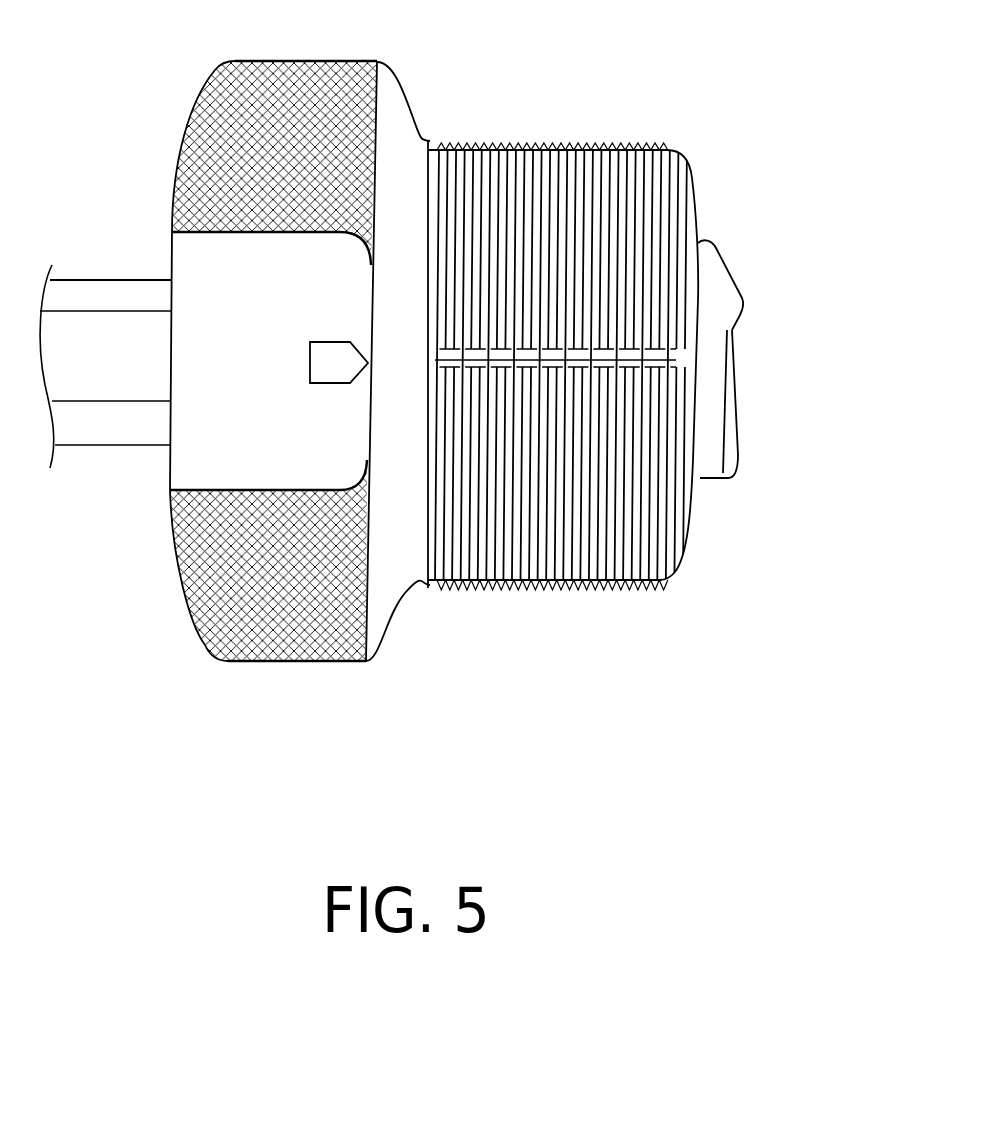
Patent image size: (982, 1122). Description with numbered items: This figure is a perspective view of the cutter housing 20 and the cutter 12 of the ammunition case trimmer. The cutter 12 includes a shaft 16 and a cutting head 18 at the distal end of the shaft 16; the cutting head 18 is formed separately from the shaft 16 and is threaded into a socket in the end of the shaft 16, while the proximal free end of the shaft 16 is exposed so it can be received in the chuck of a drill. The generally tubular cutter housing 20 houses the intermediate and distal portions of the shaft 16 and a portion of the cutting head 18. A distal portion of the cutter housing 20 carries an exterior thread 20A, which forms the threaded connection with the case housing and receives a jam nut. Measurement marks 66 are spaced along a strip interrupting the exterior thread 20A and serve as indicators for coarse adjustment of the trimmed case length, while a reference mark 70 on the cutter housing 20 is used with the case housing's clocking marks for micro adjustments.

The cutter 12 is at (752, 296).
The shaft 16 is at (113, 448).
The cutting head 18 is at (720, 262).
The cutter housing 20 is at (407, 96).
The exterior thread 20A is at (548, 143).
The measurement marks 66 is at (473, 348).
The reference mark 70 is at (343, 383).